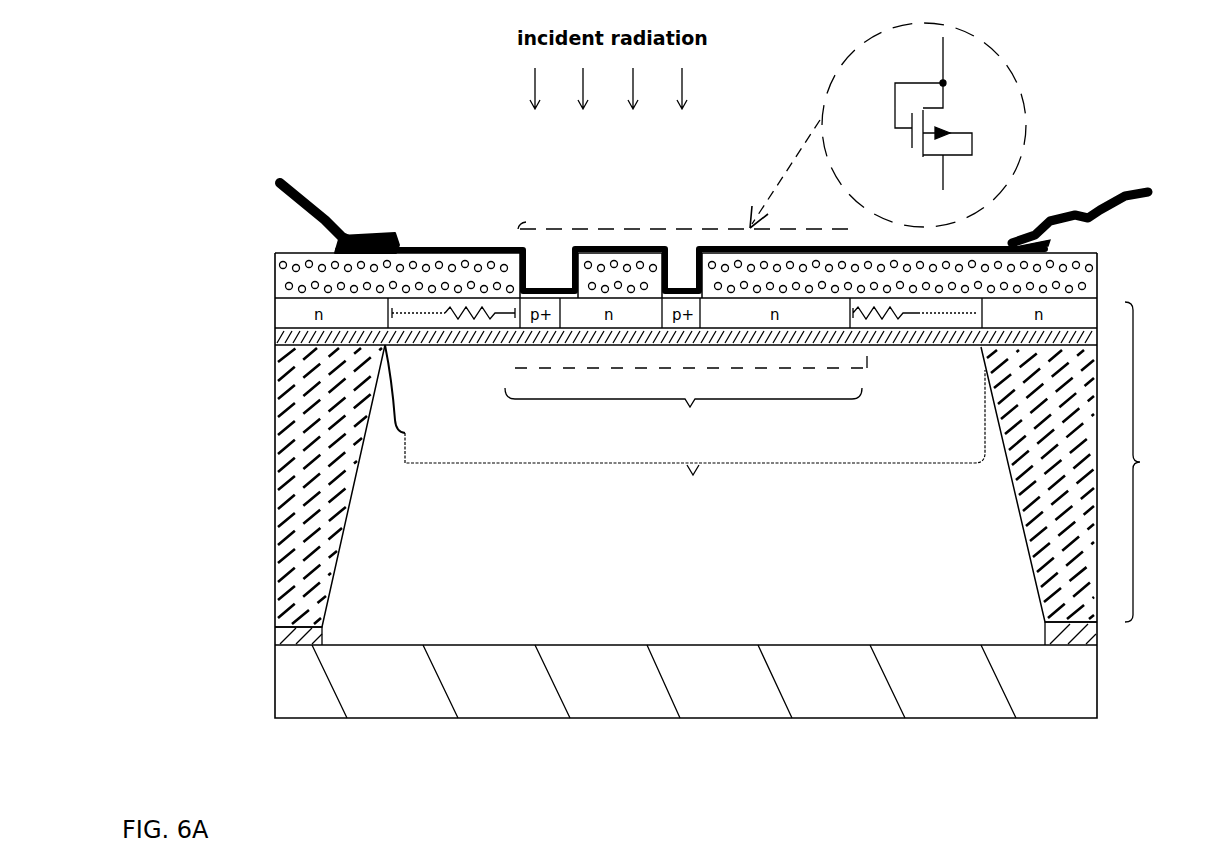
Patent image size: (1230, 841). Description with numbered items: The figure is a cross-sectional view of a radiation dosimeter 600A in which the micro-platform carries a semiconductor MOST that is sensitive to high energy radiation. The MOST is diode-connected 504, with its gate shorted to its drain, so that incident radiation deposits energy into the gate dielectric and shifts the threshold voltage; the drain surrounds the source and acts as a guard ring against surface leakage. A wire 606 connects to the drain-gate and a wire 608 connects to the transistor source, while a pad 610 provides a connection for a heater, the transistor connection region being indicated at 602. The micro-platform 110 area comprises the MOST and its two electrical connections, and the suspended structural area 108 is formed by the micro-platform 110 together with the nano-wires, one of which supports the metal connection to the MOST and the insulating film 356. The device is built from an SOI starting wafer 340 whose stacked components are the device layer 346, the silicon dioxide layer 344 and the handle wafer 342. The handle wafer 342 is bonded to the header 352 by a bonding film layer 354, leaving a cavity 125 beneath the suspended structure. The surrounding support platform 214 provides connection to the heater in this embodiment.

The radiation dosimeter 600A is at (604, 395).
The transistor connection region 602 is at (673, 225).
The diode-connected MOST 504 is at (1028, 130).
The wire 606 is at (279, 180).
The wire 608 is at (1152, 192).
The pad 610 is at (422, 250).
The insulating film 356 is at (278, 250).
The device layer 346 is at (275, 318).
The silicon dioxide layer 344 is at (275, 337).
The handle wafer 342 is at (275, 437).
The bonding film layer 354 is at (275, 632).
The header 352 is at (275, 685).
The SOI starting wafer 340 is at (1156, 462).
The surrounding support platform 214 is at (485, 350).
The micro-platform 110 is at (686, 400).
The suspended structural area 108 is at (695, 439).
The cavity 125 is at (683, 595).